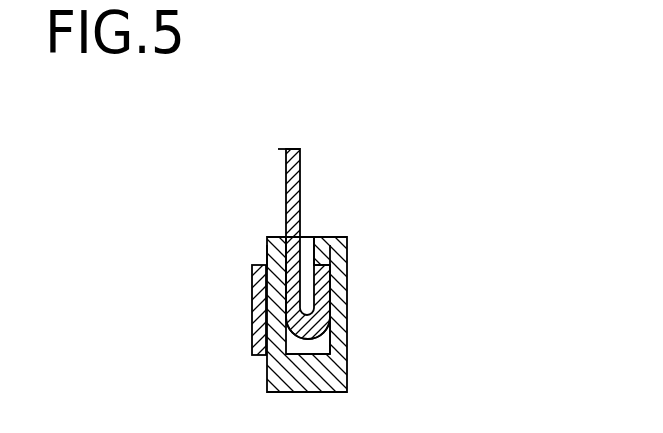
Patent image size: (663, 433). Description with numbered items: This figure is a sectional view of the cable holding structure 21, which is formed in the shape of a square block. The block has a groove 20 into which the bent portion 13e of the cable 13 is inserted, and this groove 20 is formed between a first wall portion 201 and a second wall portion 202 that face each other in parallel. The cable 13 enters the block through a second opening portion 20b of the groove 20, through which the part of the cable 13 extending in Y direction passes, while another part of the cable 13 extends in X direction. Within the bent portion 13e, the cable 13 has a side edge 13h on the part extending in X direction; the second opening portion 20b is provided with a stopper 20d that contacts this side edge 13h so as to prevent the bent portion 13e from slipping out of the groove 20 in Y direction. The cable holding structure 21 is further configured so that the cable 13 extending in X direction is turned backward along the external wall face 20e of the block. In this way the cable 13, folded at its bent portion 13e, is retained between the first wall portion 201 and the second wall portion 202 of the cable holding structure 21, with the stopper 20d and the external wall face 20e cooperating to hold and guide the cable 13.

The cable 13 is at (284, 176).
The bent portion 13e is at (329, 328).
The side edge 13h is at (333, 255).
The groove 20 is at (320, 228).
The second opening portion 20b is at (306, 237).
The stopper 20d is at (340, 282).
The external wall face 20e is at (266, 241).
The cable holding structure 21 is at (345, 228).
The first wall portion 201 is at (270, 253).
The second wall portion 202 is at (338, 349).